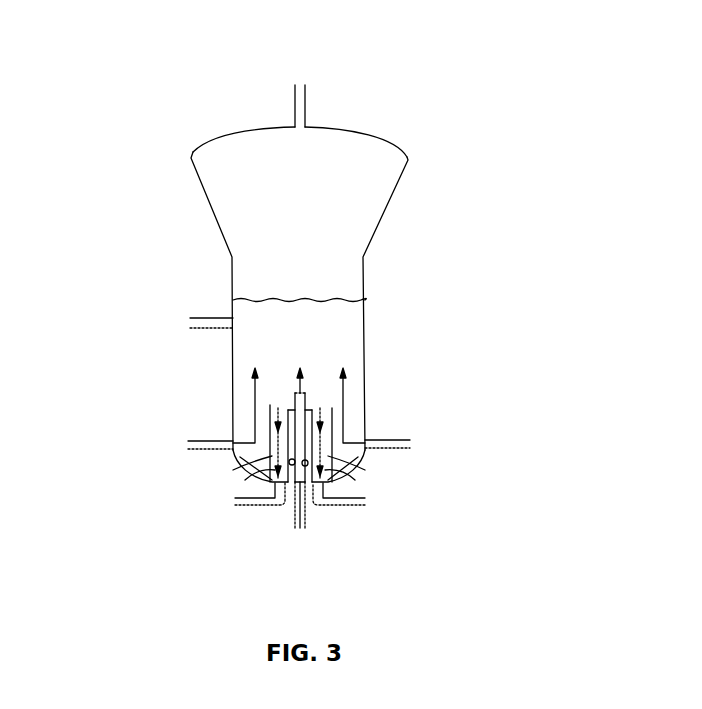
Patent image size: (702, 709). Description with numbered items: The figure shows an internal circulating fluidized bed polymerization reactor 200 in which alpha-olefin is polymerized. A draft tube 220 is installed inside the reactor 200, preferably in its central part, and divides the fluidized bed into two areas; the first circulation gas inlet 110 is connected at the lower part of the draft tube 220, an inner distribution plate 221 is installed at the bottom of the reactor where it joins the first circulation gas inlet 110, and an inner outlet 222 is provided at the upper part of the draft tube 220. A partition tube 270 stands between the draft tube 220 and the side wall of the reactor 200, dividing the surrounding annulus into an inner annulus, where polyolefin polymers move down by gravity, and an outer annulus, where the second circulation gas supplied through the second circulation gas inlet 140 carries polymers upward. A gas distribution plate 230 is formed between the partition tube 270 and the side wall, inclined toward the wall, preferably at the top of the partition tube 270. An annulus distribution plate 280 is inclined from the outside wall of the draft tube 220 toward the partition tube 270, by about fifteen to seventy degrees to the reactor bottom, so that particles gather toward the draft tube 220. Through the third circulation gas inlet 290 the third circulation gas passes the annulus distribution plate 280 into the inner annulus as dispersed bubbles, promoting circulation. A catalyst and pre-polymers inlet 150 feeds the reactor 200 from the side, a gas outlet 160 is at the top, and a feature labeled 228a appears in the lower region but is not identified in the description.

The polymerization reactor 200 is at (425, 108).
The first circulation gas inlet 110 is at (294, 520).
The second circulation gas inlet 140 is at (198, 436).
The catalyst and pre-polymers inlet 150 is at (197, 318).
The gas outlet 160 is at (293, 97).
The draft tube 220 is at (333, 415).
The inner distribution plate 221 is at (312, 508).
The inner outlet 222 is at (303, 398).
The nozzle 228a is at (265, 452).
The gas distribution plate 230 is at (262, 405).
The partition tube 270 is at (270, 428).
The annulus distribution plate 280 is at (265, 465).
The third circulation gas inlet 290 is at (255, 506).